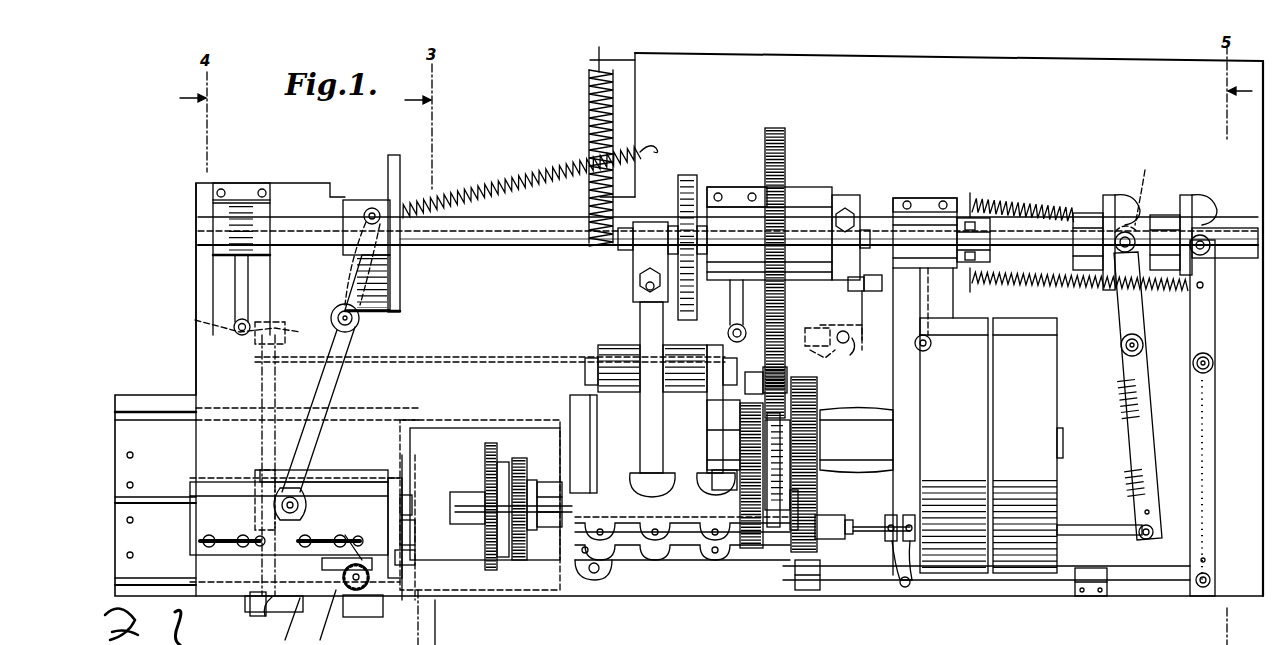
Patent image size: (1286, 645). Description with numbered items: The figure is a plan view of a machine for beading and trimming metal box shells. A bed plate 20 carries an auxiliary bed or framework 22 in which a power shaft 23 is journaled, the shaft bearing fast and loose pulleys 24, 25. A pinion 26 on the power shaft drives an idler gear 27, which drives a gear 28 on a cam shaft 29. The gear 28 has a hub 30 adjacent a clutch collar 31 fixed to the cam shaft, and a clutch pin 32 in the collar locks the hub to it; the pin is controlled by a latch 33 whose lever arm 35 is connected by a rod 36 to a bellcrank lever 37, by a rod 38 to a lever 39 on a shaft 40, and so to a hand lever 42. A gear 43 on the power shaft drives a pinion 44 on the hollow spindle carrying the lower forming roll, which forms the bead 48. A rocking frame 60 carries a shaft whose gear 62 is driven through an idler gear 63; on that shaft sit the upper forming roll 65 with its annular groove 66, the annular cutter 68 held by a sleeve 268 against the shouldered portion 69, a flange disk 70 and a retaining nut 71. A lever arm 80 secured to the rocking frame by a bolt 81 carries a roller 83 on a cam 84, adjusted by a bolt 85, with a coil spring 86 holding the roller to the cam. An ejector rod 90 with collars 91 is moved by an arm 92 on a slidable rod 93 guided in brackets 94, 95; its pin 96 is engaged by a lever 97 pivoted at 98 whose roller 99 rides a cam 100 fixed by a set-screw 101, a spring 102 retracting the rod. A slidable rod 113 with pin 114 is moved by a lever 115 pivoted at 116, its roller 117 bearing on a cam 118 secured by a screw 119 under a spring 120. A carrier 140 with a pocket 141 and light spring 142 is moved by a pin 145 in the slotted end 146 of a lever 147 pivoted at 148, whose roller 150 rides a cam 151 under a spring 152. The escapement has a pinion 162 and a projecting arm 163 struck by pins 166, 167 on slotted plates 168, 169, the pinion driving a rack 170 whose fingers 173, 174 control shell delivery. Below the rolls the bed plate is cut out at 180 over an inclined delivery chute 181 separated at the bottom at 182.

The bed plate 20 is at (1250, 134).
The auxiliary bed or framework 22 is at (628, 560).
The power shaft 23 is at (1065, 455).
The fast pulley 24 is at (928, 383).
The loose pulley 25 is at (1052, 377).
The pinion 26 is at (818, 408).
The idler gear 27 is at (783, 376).
The gear 28 is at (765, 142).
The cam shaft 29 is at (200, 230).
The hub 30 is at (796, 205).
The clutch collar 31 is at (848, 195).
The clutch pin 32 is at (866, 232).
The latch 33 is at (864, 291).
The lever arm 35 is at (858, 315).
The rod 36 is at (869, 346).
The bellcrank lever 37 is at (828, 334).
The rod 38 is at (464, 358).
The lever 39 is at (233, 328).
The shaft 40 is at (262, 392).
The hand lever 42 is at (257, 621).
The gear 43 is at (805, 492).
The pinion 44 is at (820, 515).
The bead 48 is at (750, 643).
The rocking frame 60 is at (670, 405).
The gear 62 is at (782, 560).
The idler gear 63 is at (723, 445).
The upper or external forming roll 65 is at (503, 560).
The annular groove 66 is at (498, 480).
The annular cutter 68 is at (522, 522).
The enlarged shouldered portion 69 is at (555, 484).
The flange disk 70 is at (495, 572).
The retaining nut 71 is at (462, 505).
The lever arm 80 is at (645, 328).
The bolt 81 is at (594, 358).
The roller 83 is at (684, 228).
The cam 84 is at (688, 176).
The bolt 85 is at (636, 290).
The coil spring 86 is at (590, 120).
The ejector rod 90 is at (881, 541).
The collars 91 is at (900, 515).
The arm 92 is at (898, 588).
The slidable rod 93 is at (1134, 578).
The bracket 94 is at (818, 588).
The bracket 95 is at (1092, 598).
The pin 96 is at (1210, 578).
The lever 97 is at (1215, 445).
The pivot 98 is at (1214, 363).
The roller 99 is at (1212, 228).
The cam 100 is at (1186, 195).
The set-screw 101 is at (1165, 215).
The spring 102 is at (1050, 278).
The slidable rod 113 is at (1068, 532).
The pin 114 is at (1140, 528).
The lever 115 is at (1133, 445).
The pivot 116 is at (1122, 344).
The roller 117 is at (1140, 203).
The cam 118 is at (1108, 195).
The screw 119 is at (1090, 225).
The spring 120 is at (1030, 204).
The carrier 140 is at (395, 492).
The pocket 141 is at (416, 540).
The light spring 142 is at (412, 512).
The pin 145 is at (300, 500).
The slotted end 146 is at (305, 486).
The lever 147 is at (328, 372).
The pivot 148 is at (333, 310).
The roller 150 is at (370, 207).
The cam 151 is at (402, 280).
The spring 152 is at (495, 182).
The pinion 162 is at (318, 617).
The projecting arm 163 is at (345, 535).
The pin 166 is at (258, 568).
The pin 167 is at (362, 535).
The slotted attaching plate 168 is at (232, 536).
The slotted attaching plate 169 is at (330, 531).
The rack 170 is at (290, 621).
The finger 173 is at (416, 560).
The finger 174 is at (415, 598).
The cut-out opening 180 is at (465, 440).
The inclined delivery chute 181 is at (170, 413).
The bottom separation 182 is at (155, 502).
The sleeve 268 is at (545, 497).